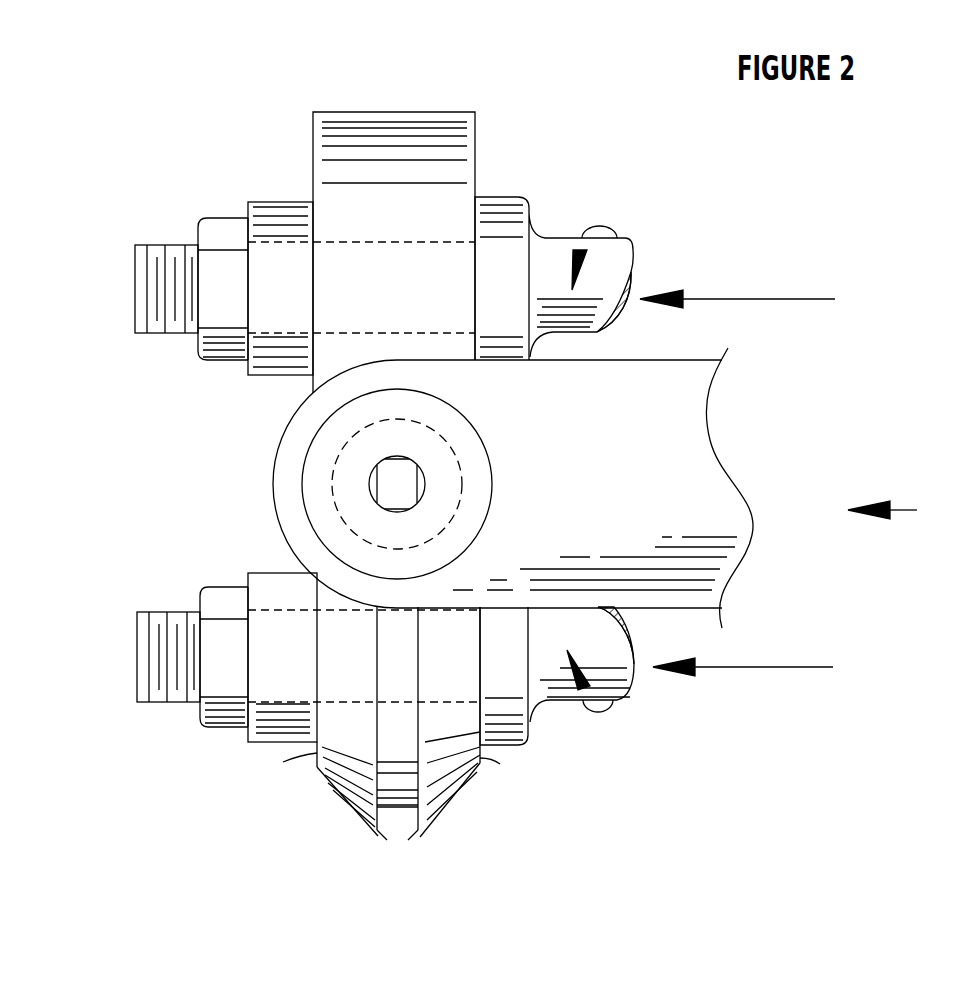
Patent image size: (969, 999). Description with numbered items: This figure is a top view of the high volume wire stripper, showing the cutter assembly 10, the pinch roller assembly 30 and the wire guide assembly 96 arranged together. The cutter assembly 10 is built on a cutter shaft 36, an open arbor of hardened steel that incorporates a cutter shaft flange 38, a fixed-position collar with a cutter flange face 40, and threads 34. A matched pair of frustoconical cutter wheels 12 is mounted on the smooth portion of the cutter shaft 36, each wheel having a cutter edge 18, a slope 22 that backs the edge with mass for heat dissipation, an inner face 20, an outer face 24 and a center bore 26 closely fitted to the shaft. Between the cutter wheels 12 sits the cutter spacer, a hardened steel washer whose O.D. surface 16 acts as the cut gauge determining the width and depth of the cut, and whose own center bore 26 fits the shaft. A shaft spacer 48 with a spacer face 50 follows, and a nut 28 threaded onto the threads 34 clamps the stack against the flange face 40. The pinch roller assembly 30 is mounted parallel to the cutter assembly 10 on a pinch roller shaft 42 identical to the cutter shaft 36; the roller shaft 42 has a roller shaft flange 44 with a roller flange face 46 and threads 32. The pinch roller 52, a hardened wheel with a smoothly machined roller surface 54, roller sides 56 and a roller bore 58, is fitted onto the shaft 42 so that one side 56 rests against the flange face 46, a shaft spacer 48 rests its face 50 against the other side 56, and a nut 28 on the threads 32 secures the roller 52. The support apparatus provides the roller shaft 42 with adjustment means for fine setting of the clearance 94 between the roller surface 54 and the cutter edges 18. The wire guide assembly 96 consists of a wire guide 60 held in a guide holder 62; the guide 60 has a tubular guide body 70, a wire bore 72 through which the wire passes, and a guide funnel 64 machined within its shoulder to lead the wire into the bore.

The cutter assembly 10 is at (754, 664).
The cutter wheels 12 is at (327, 772).
The O.D. surface 16 is at (398, 807).
The cutter edge 18 is at (372, 478).
The inner face 20 is at (387, 840).
The slope 22 is at (345, 802).
The outer face 24 is at (283, 762).
The center bore 26 is at (317, 661).
The nut 28 is at (212, 348).
The pinch roller assembly 30 is at (752, 296).
The threads 32 is at (153, 272).
The threads 34 is at (153, 660).
The cutter shaft 36 is at (615, 678).
The cutter shaft flange 38 is at (498, 655).
The cutter flange face 40 is at (480, 723).
The pinch roller shaft 42 is at (597, 280).
The roller shaft flange 44 is at (512, 277).
The roller flange face 46 is at (478, 270).
The shaft spacer 48 is at (290, 212).
The spacer face 50 is at (315, 191).
The pinch roller 52 is at (435, 133).
The roller surface 54 is at (386, 110).
The roller sides 56 is at (312, 133).
The roller bore 58 is at (382, 237).
The wire guide 60 is at (297, 457).
The guide holder 62 is at (700, 515).
The guide funnel 64 is at (337, 425).
The guide body 70 is at (460, 503).
The wire bore 72 is at (370, 490).
The clearance 94 is at (402, 470).
The wire guide assembly 96 is at (901, 509).